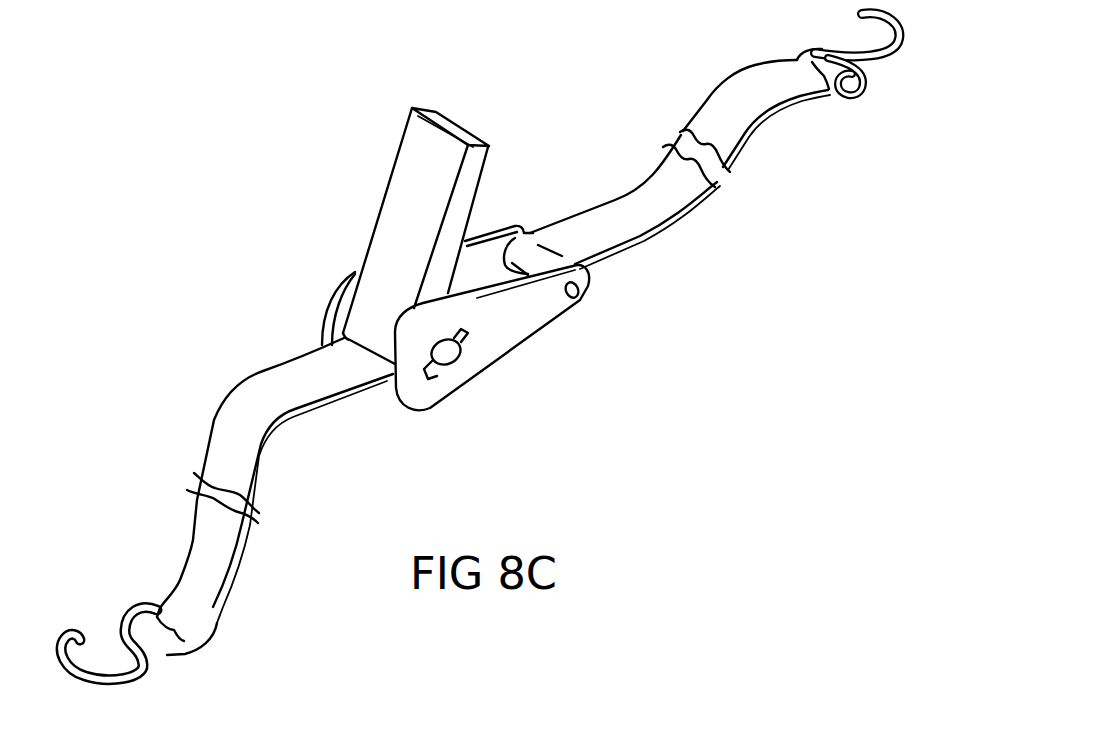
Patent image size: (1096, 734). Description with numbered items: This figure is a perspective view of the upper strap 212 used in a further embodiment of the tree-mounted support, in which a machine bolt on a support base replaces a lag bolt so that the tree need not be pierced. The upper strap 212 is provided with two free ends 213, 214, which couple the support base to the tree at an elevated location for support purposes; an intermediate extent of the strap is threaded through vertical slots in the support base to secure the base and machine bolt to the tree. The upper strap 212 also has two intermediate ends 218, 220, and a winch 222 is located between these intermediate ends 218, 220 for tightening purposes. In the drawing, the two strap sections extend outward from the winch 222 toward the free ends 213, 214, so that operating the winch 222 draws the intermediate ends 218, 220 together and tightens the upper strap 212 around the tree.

The upper strap 212 is at (313, 410).
The free end 213 is at (240, 575).
The free end 214 is at (777, 113).
The intermediate end 218 is at (382, 390).
The intermediate end 220 is at (597, 260).
The winch 222 is at (510, 353).